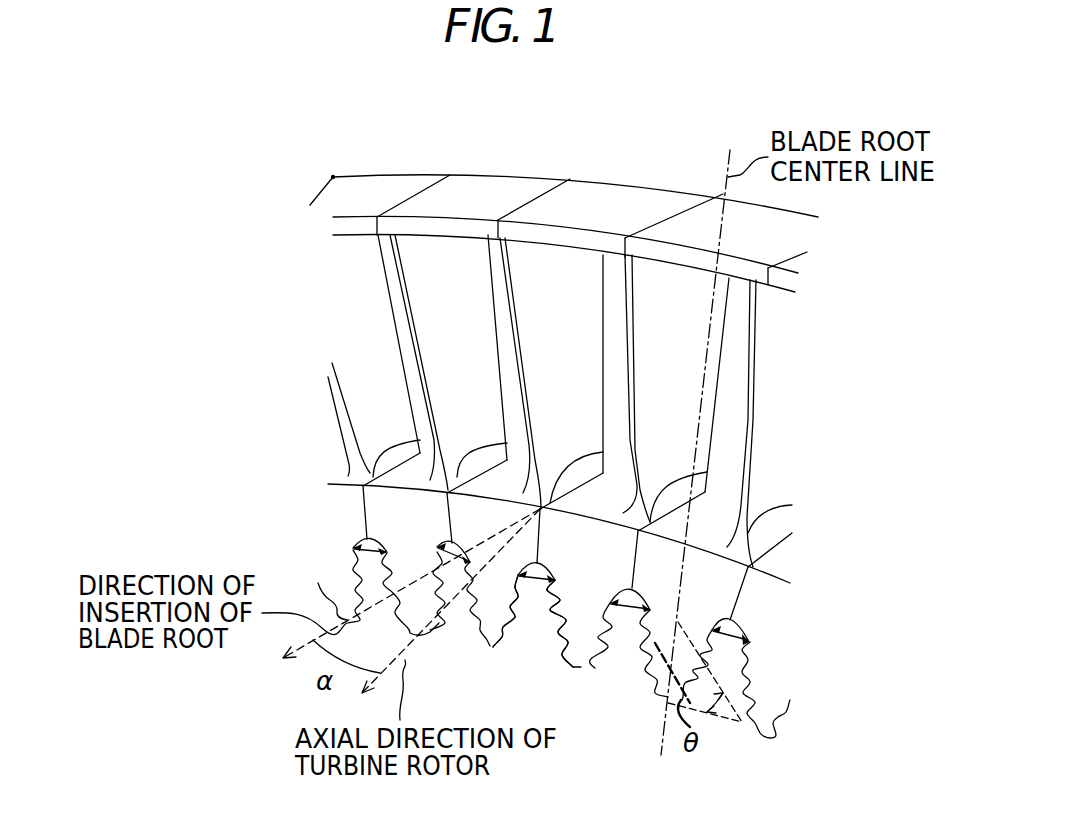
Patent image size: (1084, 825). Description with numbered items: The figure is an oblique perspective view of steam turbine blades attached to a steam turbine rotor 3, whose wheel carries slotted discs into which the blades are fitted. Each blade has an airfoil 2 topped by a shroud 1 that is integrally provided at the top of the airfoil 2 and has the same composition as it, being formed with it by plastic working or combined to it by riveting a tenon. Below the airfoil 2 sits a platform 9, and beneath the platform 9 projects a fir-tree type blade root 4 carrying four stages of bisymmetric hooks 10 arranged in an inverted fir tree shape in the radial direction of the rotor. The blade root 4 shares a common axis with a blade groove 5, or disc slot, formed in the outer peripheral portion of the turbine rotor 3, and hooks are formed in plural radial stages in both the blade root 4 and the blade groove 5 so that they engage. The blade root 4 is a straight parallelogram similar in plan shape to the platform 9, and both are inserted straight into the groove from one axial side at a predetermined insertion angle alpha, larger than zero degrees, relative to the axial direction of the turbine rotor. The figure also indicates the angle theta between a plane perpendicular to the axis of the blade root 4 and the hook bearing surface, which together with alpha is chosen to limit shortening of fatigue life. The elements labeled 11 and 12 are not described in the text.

The shroud 1 is at (360, 192).
The airfoil 2 is at (773, 323).
The steam turbine rotor 3 is at (536, 623).
The fir-tree type blade root 4 is at (574, 668).
The blade groove 5 is at (605, 643).
The platform 9 is at (770, 528).
The hooks 10 is at (500, 640).
The blade trailing edge 11 is at (745, 410).
The direction of rotation 12 is at (371, 294).